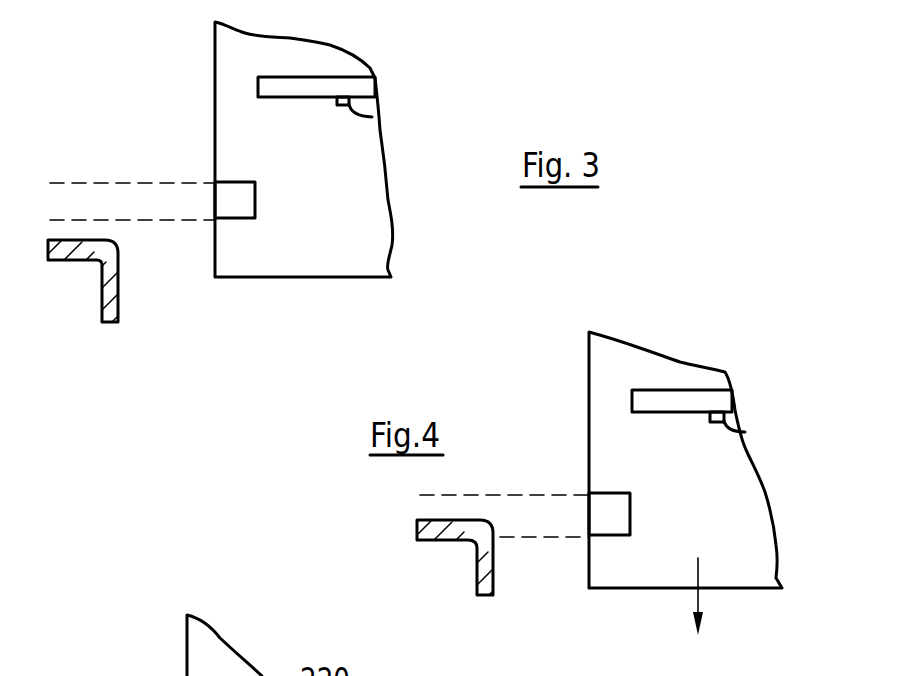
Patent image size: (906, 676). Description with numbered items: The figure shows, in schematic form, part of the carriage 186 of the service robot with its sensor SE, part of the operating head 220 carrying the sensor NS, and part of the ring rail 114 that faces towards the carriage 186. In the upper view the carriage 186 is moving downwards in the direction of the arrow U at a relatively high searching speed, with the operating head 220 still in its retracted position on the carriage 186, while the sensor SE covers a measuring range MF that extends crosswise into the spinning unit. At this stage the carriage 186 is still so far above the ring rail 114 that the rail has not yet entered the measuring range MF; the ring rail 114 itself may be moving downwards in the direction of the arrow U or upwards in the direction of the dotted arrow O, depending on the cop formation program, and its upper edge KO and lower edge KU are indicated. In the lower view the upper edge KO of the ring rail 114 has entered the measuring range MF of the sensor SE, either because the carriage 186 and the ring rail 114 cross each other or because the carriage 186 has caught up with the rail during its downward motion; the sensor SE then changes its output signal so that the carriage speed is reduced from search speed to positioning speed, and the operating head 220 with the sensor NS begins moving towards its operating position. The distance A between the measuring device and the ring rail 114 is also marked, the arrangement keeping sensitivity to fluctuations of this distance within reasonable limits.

In FIG. 3, the carriage 186 is at (215, 131).
In FIG. 4, the carriage 186 is at (752, 508).
In FIG. 3, the operating head 220 is at (353, 84).
In FIG. 4, the operating head 220 is at (720, 400).
In FIG. 3, the sensor NS is at (372, 117).
In FIG. 4, the sensor NS is at (745, 432).
In FIG. 3, the sensor SE is at (245, 201).
In FIG. 4, the sensor SE is at (614, 517).
In FIG. 3, the measuring range MF is at (110, 190).
In FIG. 4, the measuring range MF is at (552, 512).
In FIG. 3, the upper edge KO is at (118, 238).
In FIG. 3, the lower edge KU is at (117, 325).
In FIG. 3, the arrow U is at (42, 277).
In FIG. 3, the arrow O is at (78, 275).
In FIG. 4, the ring rail 114 is at (477, 568).
In FIG. 4, the distance A is at (592, 653).